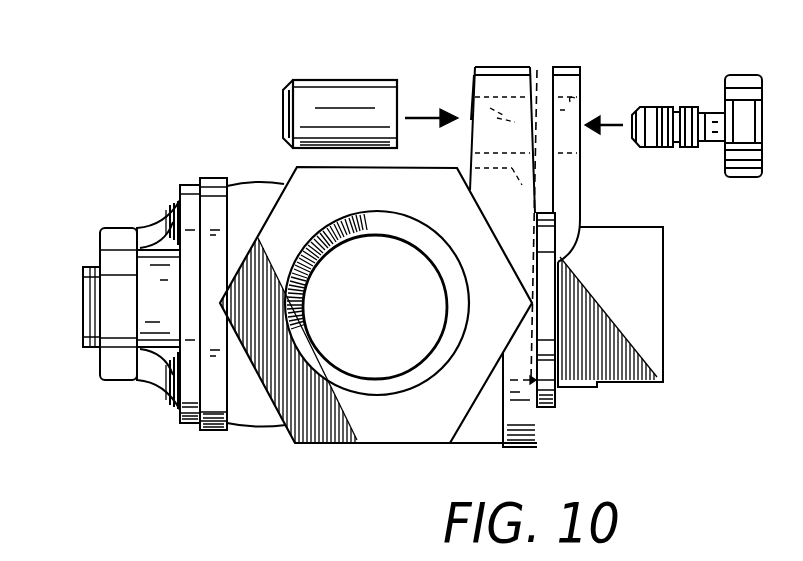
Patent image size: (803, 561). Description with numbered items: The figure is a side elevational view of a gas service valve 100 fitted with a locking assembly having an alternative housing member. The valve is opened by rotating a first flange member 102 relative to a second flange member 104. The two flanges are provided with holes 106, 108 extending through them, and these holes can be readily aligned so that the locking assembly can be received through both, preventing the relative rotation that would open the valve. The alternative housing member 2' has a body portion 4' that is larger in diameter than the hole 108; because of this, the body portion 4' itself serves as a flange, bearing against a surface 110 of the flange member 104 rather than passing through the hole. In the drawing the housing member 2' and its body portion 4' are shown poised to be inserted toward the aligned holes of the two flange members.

The gas service valve 100 is at (109, 445).
The first flange member 102 is at (580, 72).
The second flange member 104 is at (508, 68).
The hole 106 is at (575, 98).
The hole 108 is at (537, 70).
The surface 110 is at (473, 73).
The housing member 2' is at (261, 114).
The body portion 4' is at (345, 94).